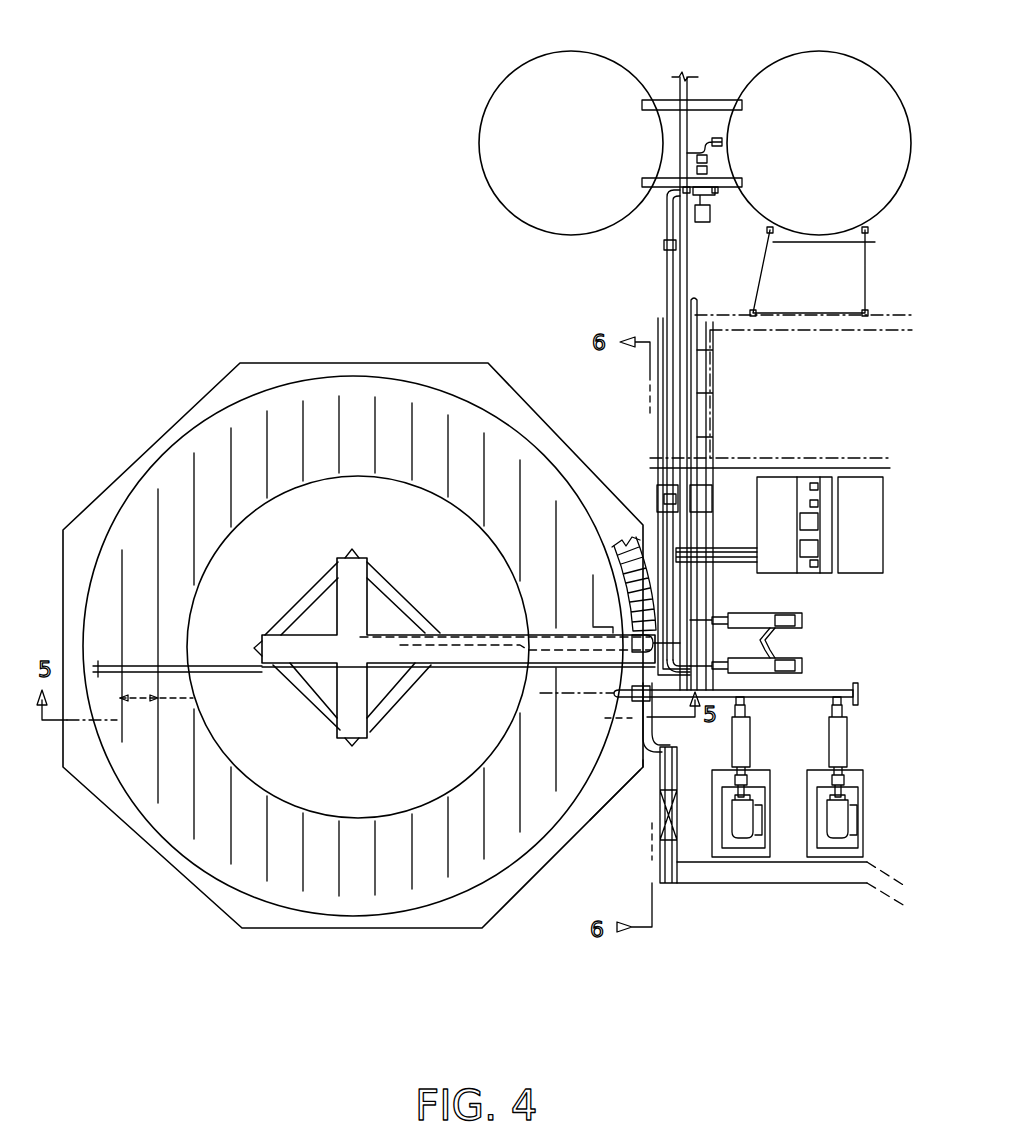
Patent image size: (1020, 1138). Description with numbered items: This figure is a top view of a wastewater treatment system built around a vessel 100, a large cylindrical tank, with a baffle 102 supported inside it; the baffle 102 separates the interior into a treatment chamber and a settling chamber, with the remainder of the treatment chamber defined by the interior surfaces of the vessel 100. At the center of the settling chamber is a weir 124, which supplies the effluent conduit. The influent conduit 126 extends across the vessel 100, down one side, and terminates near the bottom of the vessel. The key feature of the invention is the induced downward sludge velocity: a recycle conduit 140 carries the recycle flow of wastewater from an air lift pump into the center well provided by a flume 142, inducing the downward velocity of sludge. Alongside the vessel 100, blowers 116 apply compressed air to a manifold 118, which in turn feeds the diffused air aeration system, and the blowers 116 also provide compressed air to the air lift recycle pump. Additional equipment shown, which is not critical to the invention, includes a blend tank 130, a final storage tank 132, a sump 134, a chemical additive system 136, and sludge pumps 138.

The vessel 100 is at (195, 428).
The baffle 102 is at (458, 488).
The weir 124 is at (325, 632).
The flume 142 is at (385, 713).
The recycle conduit 140 is at (425, 640).
The influent conduit 126 is at (145, 665).
The final storage tank 132 is at (598, 75).
The blend tank 130 is at (770, 78).
The sump 134 is at (780, 383).
The chemical additive system 136 is at (785, 491).
The sludge pumps 138 is at (798, 615).
The manifold 118 is at (830, 690).
The blowers 116 is at (742, 830).